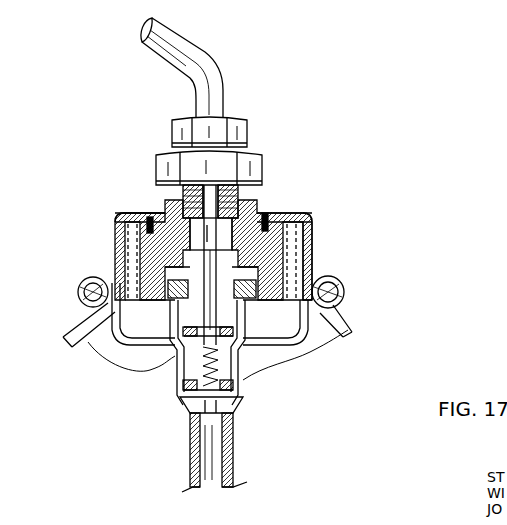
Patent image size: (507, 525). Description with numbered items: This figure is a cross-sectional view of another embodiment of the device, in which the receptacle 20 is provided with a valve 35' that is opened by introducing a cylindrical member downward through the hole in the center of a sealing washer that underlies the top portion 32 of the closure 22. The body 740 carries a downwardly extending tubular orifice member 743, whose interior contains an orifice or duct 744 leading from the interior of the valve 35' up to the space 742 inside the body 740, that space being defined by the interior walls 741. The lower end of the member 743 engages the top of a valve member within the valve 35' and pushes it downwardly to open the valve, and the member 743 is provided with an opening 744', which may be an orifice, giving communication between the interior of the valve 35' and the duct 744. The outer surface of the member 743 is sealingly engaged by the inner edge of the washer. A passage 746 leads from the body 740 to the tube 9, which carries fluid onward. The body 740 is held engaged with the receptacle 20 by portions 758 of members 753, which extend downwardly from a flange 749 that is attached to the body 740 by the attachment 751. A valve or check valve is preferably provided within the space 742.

The tube 9 is at (205, 45).
The attachment 751 is at (165, 192).
The passage 746 is at (193, 188).
The flange 749 is at (150, 208).
The interior walls 741 is at (198, 257).
The closure 22 is at (67, 233).
The orifice or duct 744 is at (145, 265).
The tubular orifice member 743 is at (150, 266).
The body 740 is at (255, 204).
The space 742 is at (297, 220).
The top portion 32 is at (232, 242).
The members 753 is at (312, 268).
The receptacle 20 is at (345, 330).
The portions 758 is at (95, 340).
The opening 744' is at (186, 352).
The valve 35' is at (231, 419).